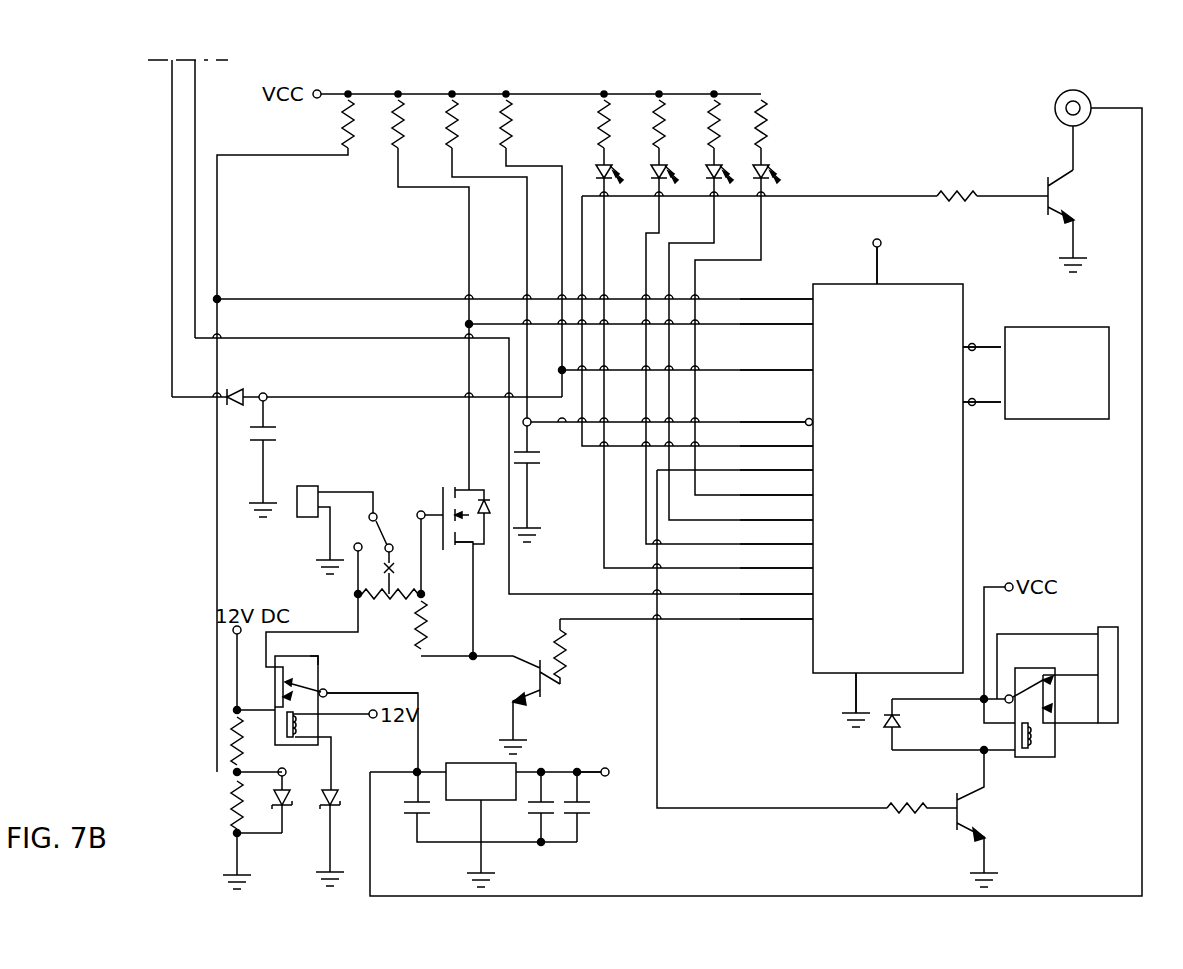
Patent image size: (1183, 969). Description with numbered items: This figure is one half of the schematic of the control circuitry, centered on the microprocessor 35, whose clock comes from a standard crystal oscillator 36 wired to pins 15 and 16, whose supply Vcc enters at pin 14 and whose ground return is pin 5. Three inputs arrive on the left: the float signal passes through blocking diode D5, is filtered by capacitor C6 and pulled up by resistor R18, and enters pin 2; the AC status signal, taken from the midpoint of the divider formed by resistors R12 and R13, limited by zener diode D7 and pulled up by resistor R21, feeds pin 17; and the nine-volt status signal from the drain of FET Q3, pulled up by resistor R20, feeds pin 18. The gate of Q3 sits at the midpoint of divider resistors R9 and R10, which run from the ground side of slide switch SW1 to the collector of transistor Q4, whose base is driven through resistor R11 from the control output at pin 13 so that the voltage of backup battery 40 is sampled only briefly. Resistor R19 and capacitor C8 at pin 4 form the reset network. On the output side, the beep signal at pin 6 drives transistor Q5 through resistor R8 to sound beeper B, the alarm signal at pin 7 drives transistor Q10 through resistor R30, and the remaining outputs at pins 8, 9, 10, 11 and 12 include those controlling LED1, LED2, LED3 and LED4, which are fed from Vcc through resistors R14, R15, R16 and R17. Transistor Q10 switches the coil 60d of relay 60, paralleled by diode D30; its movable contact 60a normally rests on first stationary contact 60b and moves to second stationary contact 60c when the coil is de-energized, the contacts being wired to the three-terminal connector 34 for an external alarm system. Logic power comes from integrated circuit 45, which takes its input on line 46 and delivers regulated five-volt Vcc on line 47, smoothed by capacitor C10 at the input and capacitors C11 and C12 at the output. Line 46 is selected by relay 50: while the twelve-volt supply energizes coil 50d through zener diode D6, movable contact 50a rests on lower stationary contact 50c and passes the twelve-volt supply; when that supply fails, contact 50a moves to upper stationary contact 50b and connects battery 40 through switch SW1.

The VDD supply pin of microcontroller 14 is at (883, 247).
The VSS ground pin of microcontroller 5 is at (859, 700).
The microprocessor oscillator pin 16 is at (984, 335).
The microprocessor oscillator pin 15 is at (984, 417).
The AC status input pin 17 is at (765, 288).
The 9V status input pin 18 is at (765, 313).
The float input pin 2 is at (766, 360).
The MCLR reset pin 4 is at (762, 410).
The beep output pin 6 is at (766, 435).
The alarm output pin 7 is at (766, 460).
The RB2 time out output pin 8 is at (772, 484).
The RB3 operation LED output pin 9 is at (766, 509).
The RB4 low 9V output pin 10 is at (764, 533).
The RB5 AC out pin 11 is at (764, 558).
The RB6 pump output pin 12 is at (764, 583).
The 9VC output pin 13 is at (764, 608).
The microprocessor 35 is at (963, 540).
The crystal oscillator 36 is at (1066, 421).
The backup battery 40 is at (308, 486).
The integrated circuit 45 is at (518, 763).
The input line 46 is at (386, 693).
The output line 47 is at (578, 772).
The relay 50 is at (304, 705).
The movable contact 50a is at (305, 688).
The upper stationary contact 50b is at (314, 654).
The lower stationary contact 50c is at (284, 696).
The relay coil 50d is at (290, 740).
The relay 60 is at (1054, 673).
The movable contact 60a is at (1024, 695).
The first stationary contact 60b is at (1048, 682).
The second stationary contact 60c is at (1050, 708).
The relay coil 60d is at (1030, 750).
The three-terminal connector 34 is at (1108, 726).
The resistor R8 is at (972, 188).
The resistor R9 is at (398, 606).
The resistor R10 is at (416, 648).
The resistor R11 is at (572, 662).
The resistor R12 is at (242, 724).
The resistor R13 is at (230, 790).
The resistor R14 is at (582, 124).
The resistor R15 is at (637, 124).
The resistor R16 is at (692, 124).
The resistor R17 is at (765, 138).
The resistor R18 is at (487, 124).
The resistor R19 is at (433, 124).
The resistor R20 is at (379, 124).
The resistor R21 is at (327, 124).
The resistor R30 is at (892, 818).
The light-emitting diode LED1 is at (598, 170).
The light-emitting diode LED2 is at (653, 170).
The light-emitting diode LED3 is at (708, 170).
The light-emitting diode LED4 is at (766, 170).
The capacitor C6 is at (268, 441).
The capacitor C8 is at (530, 468).
The capacitor C10 is at (416, 820).
The capacitor C11 is at (540, 816).
The capacitor C12 is at (586, 822).
The blocking diode D5 is at (247, 388).
The zener diode D6 is at (336, 805).
The zener diode D7 is at (288, 805).
The diode D30 is at (900, 722).
The FET Q3 is at (442, 490).
The transistor Q4 is at (536, 654).
The transistor Q5 is at (1048, 202).
The transistor Q10 is at (954, 804).
The slide switch SW1 is at (378, 510).
The beeper B is at (1084, 90).